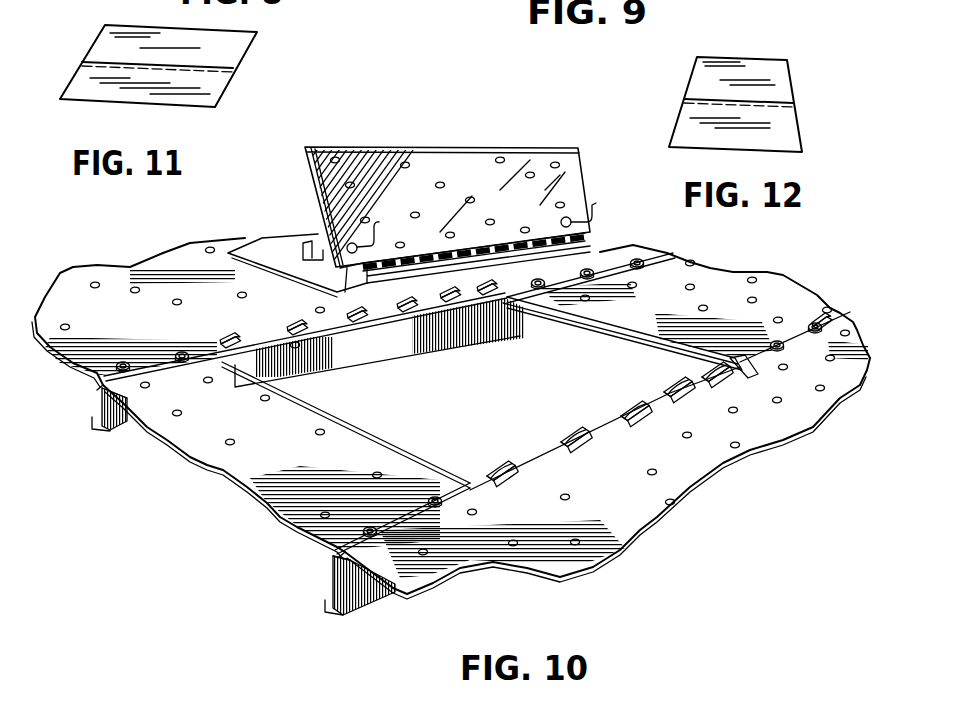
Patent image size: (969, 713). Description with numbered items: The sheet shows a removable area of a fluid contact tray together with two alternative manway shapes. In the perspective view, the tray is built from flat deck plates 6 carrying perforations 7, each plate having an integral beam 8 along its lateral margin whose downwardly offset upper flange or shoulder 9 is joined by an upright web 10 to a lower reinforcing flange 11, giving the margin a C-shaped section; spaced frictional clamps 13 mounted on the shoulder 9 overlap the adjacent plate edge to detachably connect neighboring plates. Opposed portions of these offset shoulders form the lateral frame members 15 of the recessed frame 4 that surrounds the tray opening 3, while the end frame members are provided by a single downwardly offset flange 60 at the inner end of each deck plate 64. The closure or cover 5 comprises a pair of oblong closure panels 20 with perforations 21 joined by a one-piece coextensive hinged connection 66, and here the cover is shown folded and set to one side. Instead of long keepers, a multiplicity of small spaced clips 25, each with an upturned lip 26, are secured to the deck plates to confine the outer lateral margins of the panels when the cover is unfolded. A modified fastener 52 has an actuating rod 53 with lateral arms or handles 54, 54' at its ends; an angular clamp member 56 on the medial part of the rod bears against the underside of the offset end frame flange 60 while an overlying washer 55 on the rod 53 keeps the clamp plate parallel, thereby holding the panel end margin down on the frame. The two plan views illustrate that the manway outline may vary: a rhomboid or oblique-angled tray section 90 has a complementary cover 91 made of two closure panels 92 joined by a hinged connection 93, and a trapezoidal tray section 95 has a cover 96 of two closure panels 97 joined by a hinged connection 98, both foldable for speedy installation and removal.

In FIG. 10, the opening 3 is at (497, 393).
In FIG. 10, the recessed frame 4 is at (403, 352).
In FIG. 10, the closure or cover 5 is at (308, 170).
In FIG. 10, the deck plate 6 is at (60, 275).
In FIG. 10, the perforations 7 is at (99, 288).
In FIG. 10, the beam 8 is at (118, 430).
In FIG. 10, the upper flange or shoulder 9 is at (88, 385).
In FIG. 10, the web 10 is at (102, 402).
In FIG. 10, the lower reinforcing flange 11 is at (92, 423).
In FIG. 10, the frictional clamps or fasteners 13 is at (122, 360).
In FIG. 10, the lateral frame members 15 is at (318, 362).
In FIG. 10, the closure panel 20 is at (250, 253).
In FIG. 10, the perforations 21 is at (440, 165).
In FIG. 10, the clip or keeper 25 is at (230, 340).
In FIG. 10, the upturned lip 26 is at (490, 326).
In FIG. 10, the fastener 52 is at (598, 220).
In FIG. 10, the actuating rod 53 is at (328, 232).
In FIG. 10, the lateral arm or handle 54 is at (284, 231).
In FIG. 10, the hook 54' is at (394, 230).
In FIG. 10, the washer 55 is at (323, 278).
In FIG. 10, the clamp member or plate 56 is at (283, 253).
In FIG. 10, the offset flange 60 is at (625, 338).
In FIG. 10, the deck plate 64 is at (250, 470).
In FIG. 10, the one-piece hinged connection 66 is at (468, 245).
In FIG. 11, the tray section or manway 90 is at (258, 32).
In FIG. 11, the cover 91 is at (105, 26).
In FIG. 11, the closure panel 92 is at (152, 40).
In FIG. 11, the hinged connection 93 is at (228, 84).
In FIG. 12, the tray section or manway 95 is at (787, 62).
In FIG. 12, the cover 96 is at (802, 152).
In FIG. 12, the closure panel 97 is at (768, 76).
In FIG. 12, the hinged connection 98 is at (703, 98).